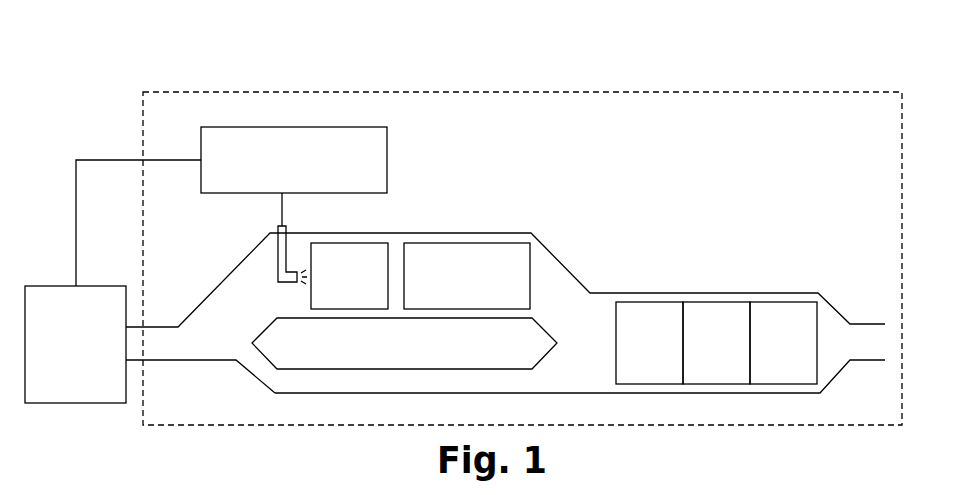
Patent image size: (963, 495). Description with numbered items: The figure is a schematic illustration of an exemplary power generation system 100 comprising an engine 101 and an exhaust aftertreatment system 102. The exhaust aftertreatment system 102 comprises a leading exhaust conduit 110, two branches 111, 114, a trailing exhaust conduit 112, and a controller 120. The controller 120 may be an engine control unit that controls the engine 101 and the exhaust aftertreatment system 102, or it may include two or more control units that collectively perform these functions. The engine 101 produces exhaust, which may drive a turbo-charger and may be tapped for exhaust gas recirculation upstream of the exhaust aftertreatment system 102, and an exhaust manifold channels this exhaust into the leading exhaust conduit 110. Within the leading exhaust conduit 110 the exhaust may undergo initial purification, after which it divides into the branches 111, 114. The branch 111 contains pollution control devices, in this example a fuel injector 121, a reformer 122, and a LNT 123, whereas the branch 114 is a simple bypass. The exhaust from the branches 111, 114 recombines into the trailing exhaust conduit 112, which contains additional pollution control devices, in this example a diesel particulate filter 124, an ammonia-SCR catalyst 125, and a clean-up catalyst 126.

The power generation system 100 is at (632, 41).
The engine 101 is at (97, 388).
The exhaust aftertreatment system 102 is at (683, 108).
The leading exhaust conduit 110 is at (152, 352).
The branch 111 is at (259, 273).
The trailing exhaust conduit 112 is at (733, 386).
The branch 114 is at (298, 382).
The controller 120 is at (378, 176).
The fuel injector 121 is at (281, 255).
The reformer 122 is at (362, 255).
The LNT 123 is at (458, 251).
The diesel particulate filter 124 is at (657, 310).
The ammonia-SCR catalyst 125 is at (733, 310).
The clean-up catalyst 126 is at (803, 310).